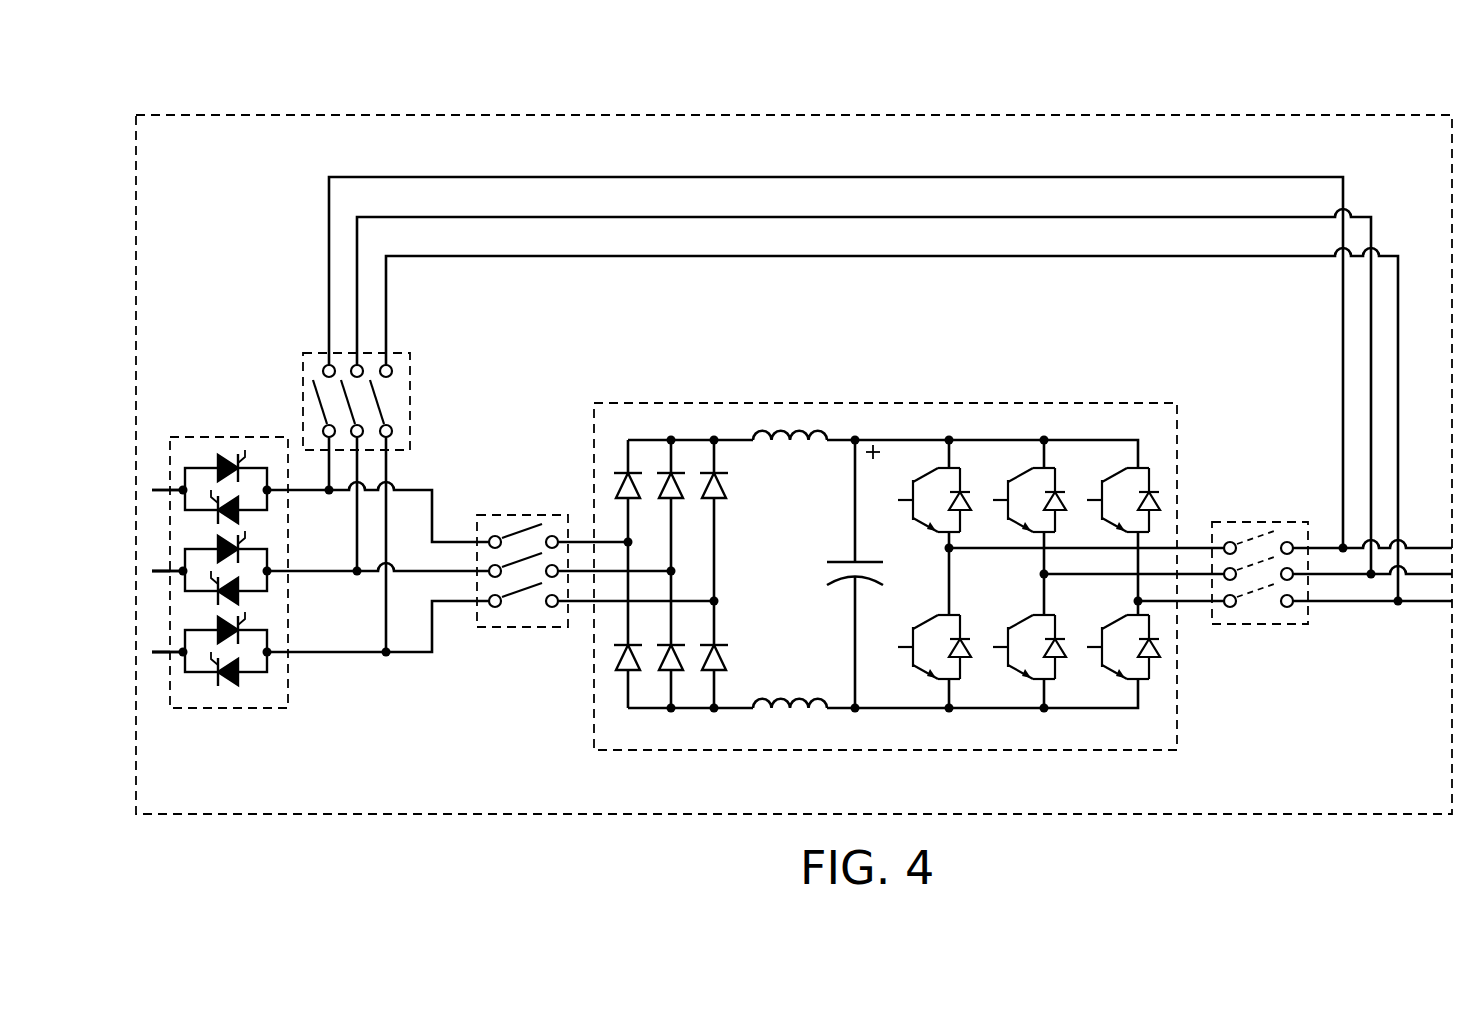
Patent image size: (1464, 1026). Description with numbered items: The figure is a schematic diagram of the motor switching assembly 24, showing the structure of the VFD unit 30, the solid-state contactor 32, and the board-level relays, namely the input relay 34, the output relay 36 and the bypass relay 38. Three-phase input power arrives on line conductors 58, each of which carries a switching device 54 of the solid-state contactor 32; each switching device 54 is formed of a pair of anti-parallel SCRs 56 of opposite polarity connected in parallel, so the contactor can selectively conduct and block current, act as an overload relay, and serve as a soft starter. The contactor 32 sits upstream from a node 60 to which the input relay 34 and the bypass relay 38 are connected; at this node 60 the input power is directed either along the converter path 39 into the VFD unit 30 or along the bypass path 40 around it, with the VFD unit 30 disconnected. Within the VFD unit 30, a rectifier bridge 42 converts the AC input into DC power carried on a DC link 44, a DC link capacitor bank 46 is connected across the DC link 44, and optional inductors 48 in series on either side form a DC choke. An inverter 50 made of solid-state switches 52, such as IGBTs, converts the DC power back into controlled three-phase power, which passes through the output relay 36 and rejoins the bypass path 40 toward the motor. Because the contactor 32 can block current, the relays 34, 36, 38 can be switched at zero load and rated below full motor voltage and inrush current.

The motor switching assembly 24 is at (1085, 95).
The VFD unit 30 is at (909, 563).
The solid-state contactor 32 is at (204, 552).
The input relay 34 is at (520, 515).
The output relay 36 is at (1262, 522).
The bypass relay 38 is at (410, 403).
The converter path 39 is at (454, 626).
The bypass path 40 is at (536, 157).
The rectifier bridge 42 is at (691, 425).
The DC link 44 is at (899, 726).
The DC link capacitor bank 46 is at (843, 581).
The inductors 48 is at (812, 443).
The inverter 50 is at (1061, 528).
The solid-state switches 52 is at (962, 521).
The switching device 54 is at (156, 485).
The SCRs 56 is at (232, 455).
The line conductor 58 is at (160, 575).
The node 60 is at (338, 494).